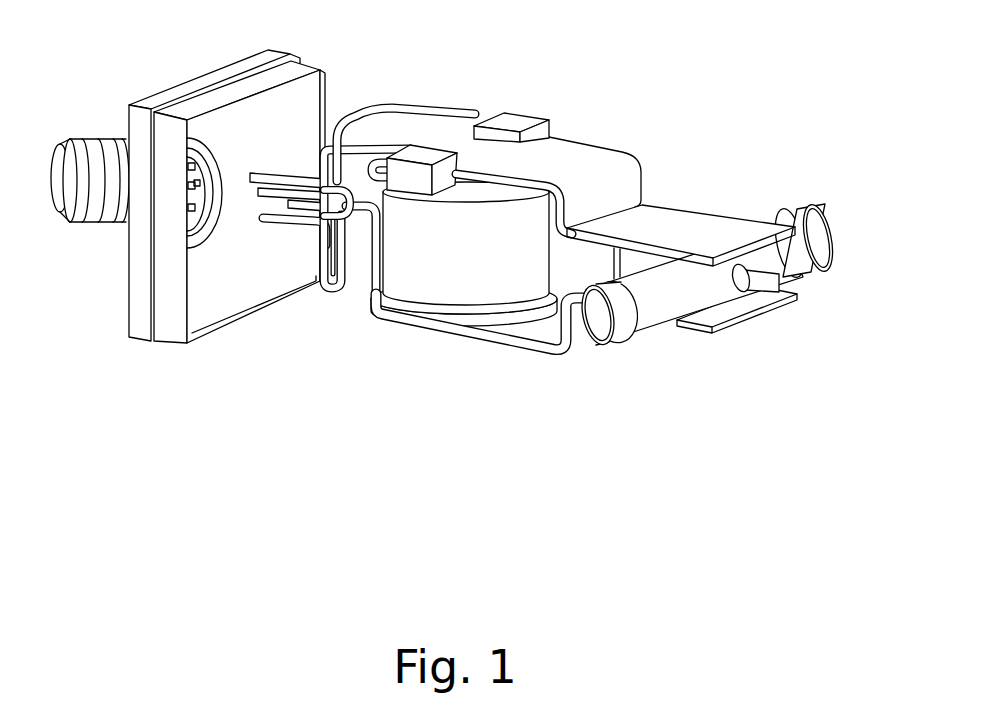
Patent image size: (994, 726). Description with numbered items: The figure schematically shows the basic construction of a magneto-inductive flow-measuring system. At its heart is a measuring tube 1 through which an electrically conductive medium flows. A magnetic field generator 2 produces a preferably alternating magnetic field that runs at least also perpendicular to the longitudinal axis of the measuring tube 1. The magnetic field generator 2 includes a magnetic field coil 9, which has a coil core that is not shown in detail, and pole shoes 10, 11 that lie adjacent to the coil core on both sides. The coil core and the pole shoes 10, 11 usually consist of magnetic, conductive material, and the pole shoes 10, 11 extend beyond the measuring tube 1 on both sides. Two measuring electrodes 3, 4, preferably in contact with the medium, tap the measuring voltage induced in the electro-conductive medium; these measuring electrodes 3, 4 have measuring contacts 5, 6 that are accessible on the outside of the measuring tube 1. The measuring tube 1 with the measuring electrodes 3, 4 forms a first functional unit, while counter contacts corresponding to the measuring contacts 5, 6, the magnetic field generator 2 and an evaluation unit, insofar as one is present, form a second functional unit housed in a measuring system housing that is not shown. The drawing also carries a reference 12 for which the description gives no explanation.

The measuring tube 1 is at (647, 307).
The magnetic field generator 2 is at (464, 258).
The measuring electrode 3 is at (681, 172).
The measuring contact 5 is at (637, 247).
The measuring electrode 4 is at (804, 338).
The measuring contact 6 is at (783, 293).
The magnetic field coil 9 is at (441, 264).
The pole shoe 10 is at (748, 233).
The pole shoe 11 is at (527, 338).
The armature arm 12 is at (570, 158).